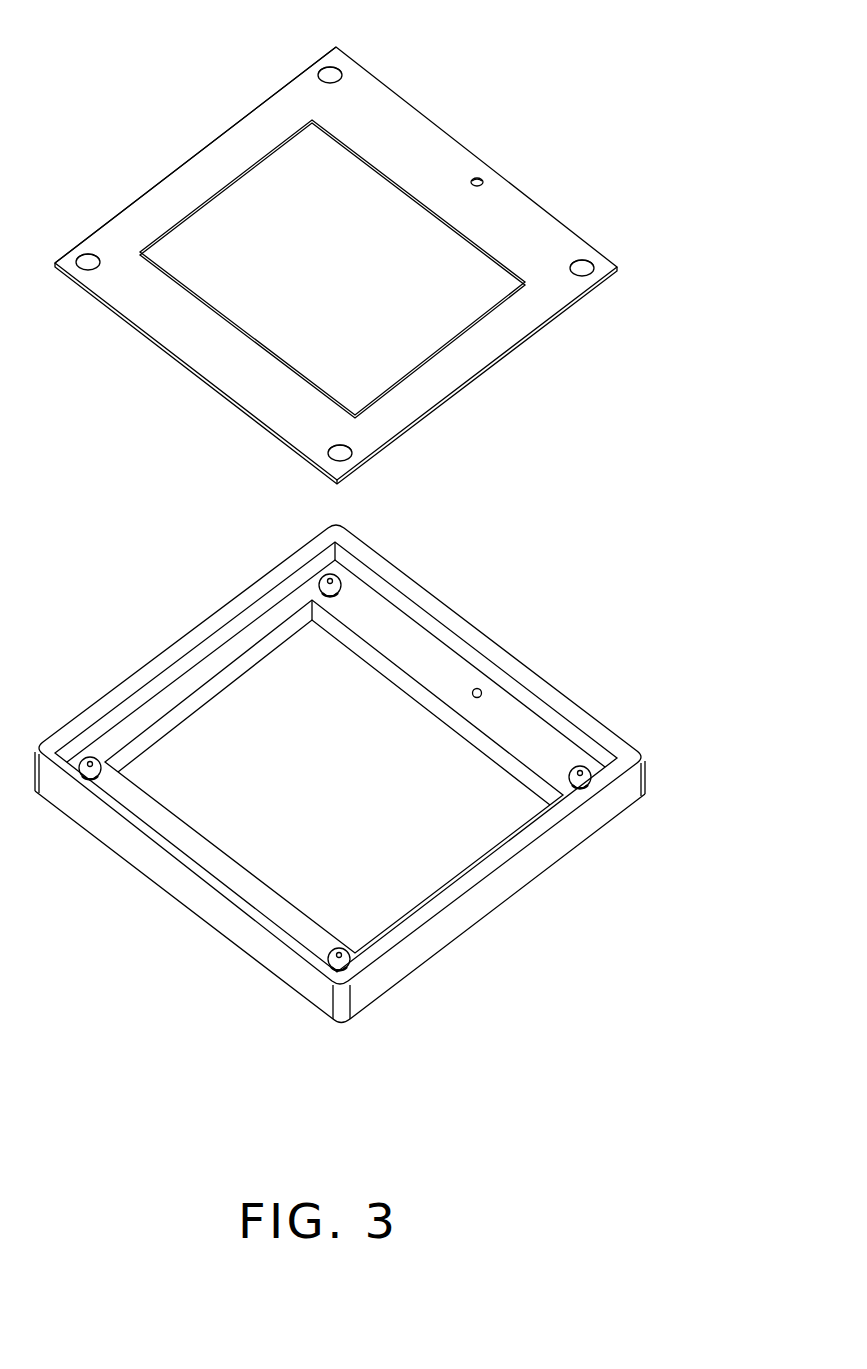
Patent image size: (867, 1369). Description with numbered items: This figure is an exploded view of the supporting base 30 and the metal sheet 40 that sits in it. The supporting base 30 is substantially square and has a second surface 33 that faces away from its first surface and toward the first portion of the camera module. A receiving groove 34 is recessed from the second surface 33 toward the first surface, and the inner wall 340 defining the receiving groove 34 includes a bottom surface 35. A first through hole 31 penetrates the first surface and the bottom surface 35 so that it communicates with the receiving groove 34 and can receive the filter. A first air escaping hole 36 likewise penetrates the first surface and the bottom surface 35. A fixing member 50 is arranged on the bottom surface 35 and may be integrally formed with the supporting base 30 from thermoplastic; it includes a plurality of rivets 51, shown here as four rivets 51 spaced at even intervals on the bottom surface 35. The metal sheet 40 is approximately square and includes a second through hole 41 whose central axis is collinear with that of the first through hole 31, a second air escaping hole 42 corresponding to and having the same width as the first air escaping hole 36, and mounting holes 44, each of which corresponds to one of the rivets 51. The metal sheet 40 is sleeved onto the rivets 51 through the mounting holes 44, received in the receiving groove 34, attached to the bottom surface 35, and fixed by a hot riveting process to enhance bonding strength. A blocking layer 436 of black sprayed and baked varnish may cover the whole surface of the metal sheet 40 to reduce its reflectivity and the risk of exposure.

The supporting base 30 is at (627, 819).
The first through hole 31 is at (385, 697).
The second surface 33 is at (560, 695).
The receiving groove 34 is at (593, 741).
The bottom surface 35 is at (400, 623).
The first air escaping hole 36 is at (480, 688).
The inner wall 340 is at (322, 564).
The metal sheet 40 is at (598, 242).
The second through hole 41 is at (372, 196).
The second air escaping hole 42 is at (480, 178).
The mounting hole 44 is at (337, 68).
The blocking layer 436 is at (202, 176).
The fixing member 50 is at (174, 565).
The rivet 51 is at (320, 581).